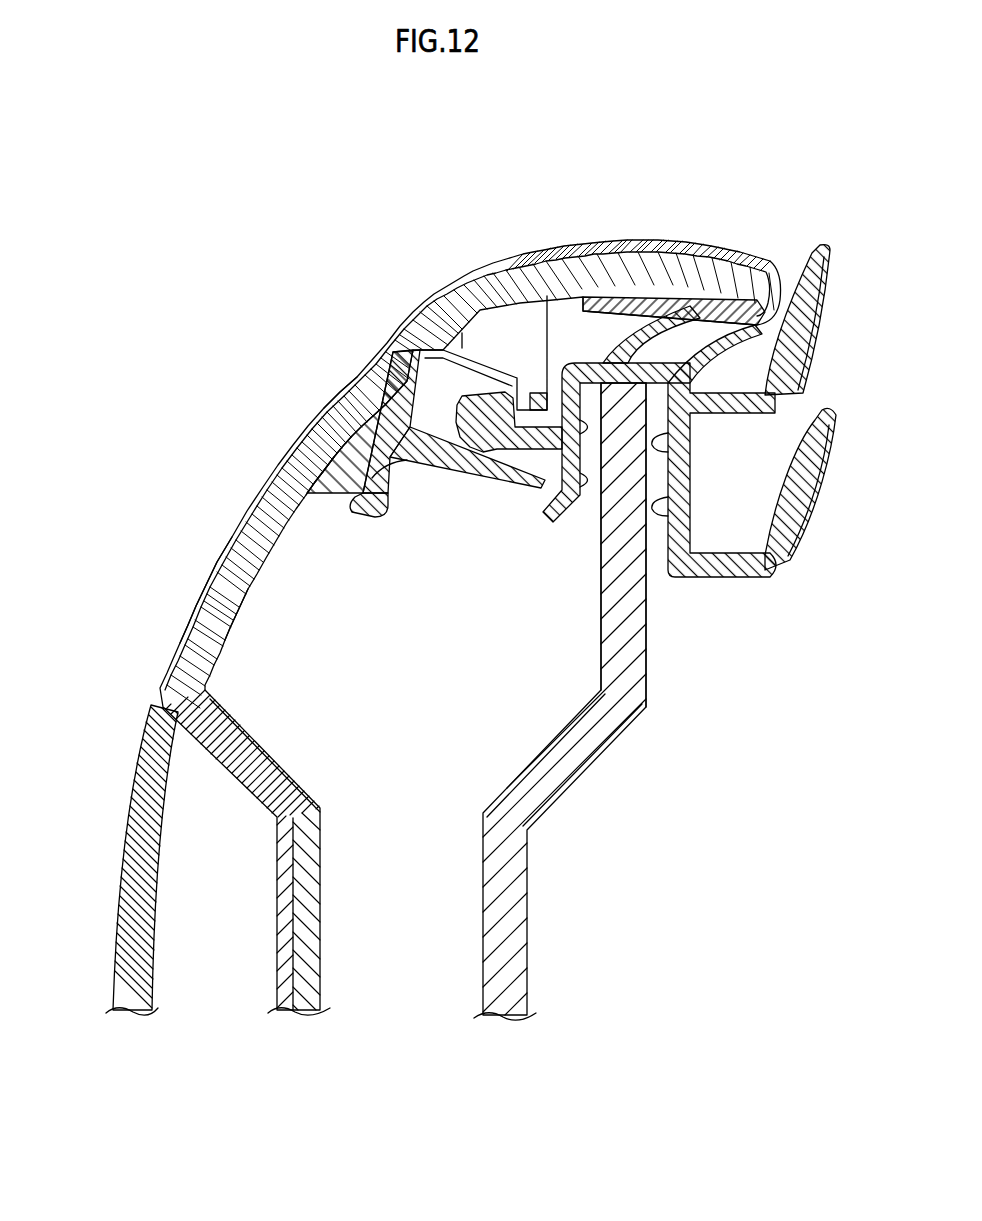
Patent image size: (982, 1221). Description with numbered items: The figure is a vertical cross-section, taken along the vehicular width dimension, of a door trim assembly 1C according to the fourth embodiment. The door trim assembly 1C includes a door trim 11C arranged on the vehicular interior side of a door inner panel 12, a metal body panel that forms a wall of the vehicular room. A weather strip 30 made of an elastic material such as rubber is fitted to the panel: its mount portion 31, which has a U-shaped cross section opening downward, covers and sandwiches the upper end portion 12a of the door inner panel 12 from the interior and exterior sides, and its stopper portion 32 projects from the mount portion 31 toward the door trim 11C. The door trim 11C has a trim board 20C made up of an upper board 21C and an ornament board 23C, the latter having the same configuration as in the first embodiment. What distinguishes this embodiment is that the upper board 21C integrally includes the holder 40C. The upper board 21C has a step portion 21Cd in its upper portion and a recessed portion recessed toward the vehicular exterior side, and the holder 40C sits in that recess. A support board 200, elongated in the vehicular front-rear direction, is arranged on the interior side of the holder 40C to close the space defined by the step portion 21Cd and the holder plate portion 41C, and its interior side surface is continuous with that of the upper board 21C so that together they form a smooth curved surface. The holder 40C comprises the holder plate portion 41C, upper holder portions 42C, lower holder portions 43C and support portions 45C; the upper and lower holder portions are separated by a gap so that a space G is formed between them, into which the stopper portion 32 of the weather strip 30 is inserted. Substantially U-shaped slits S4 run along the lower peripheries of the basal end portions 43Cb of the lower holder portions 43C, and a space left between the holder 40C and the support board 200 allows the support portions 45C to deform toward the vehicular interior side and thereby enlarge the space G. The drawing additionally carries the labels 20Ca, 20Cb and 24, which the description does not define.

The door trim assembly 1C is at (471, 232).
The door trim 11C is at (262, 440).
The door inner panel 12 is at (518, 928).
The upper end portion 12a is at (612, 567).
The trim board 20C is at (88, 632).
The upper board 21C is at (435, 627).
The ornament board 23C is at (157, 738).
The outer surface of garnish 20Ca is at (213, 570).
The inner surface of garnish 20Cb is at (240, 617).
The support board 200 is at (333, 373).
The step portion 21Cd is at (320, 417).
The decorative skin layer 24 is at (267, 487).
The weather strip 30 is at (646, 369).
The mount portion 31 is at (686, 452).
The stopper portion 32 is at (500, 423).
The holder 40C is at (439, 397).
The holder plate portion 41C is at (383, 443).
The upper holder portions 42C is at (513, 360).
The lower holder portions 43C is at (449, 458).
The basal end portions 43Cb is at (407, 460).
The support portions 45C is at (365, 407).
The space G is at (453, 387).
The slits S4 is at (378, 519).